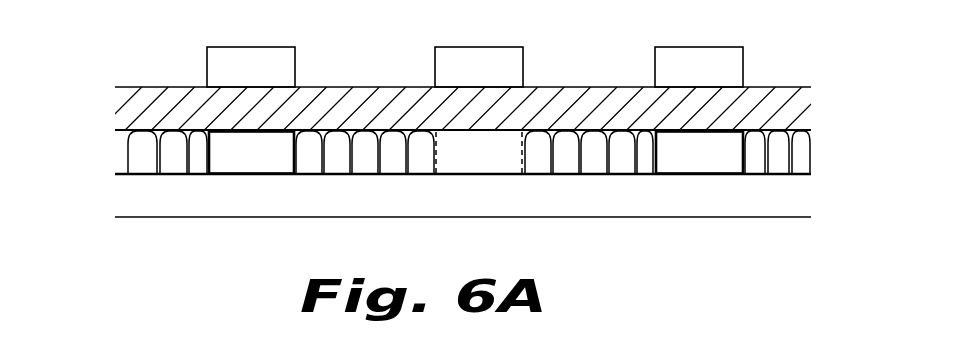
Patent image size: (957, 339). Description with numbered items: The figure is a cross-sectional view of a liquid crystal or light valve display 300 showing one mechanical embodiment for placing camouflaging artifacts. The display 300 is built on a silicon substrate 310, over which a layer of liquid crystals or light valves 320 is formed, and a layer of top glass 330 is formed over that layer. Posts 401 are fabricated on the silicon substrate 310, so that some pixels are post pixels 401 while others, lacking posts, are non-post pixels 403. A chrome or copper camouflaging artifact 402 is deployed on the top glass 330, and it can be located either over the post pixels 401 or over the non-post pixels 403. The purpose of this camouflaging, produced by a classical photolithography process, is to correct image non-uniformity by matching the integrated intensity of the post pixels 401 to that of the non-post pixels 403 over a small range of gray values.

The liquid crystal or light valve display 300 is at (722, 229).
The silicon substrate 310 is at (120, 198).
The layer of liquid crystals or light valves 320 is at (117, 155).
The top glass 330 is at (115, 107).
The posts 401 is at (233, 155).
The chrome or copper camouflaging artifact 402 is at (732, 60).
The non-post pixels 403 is at (468, 153).